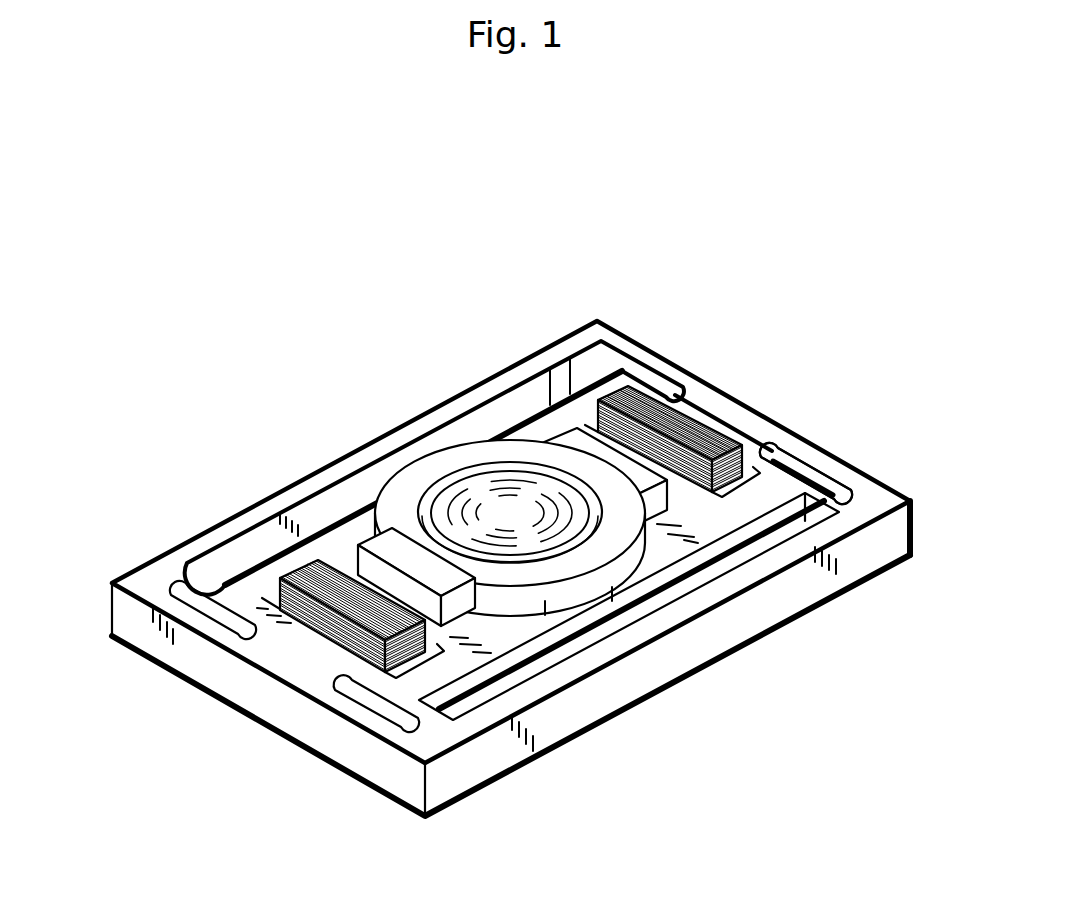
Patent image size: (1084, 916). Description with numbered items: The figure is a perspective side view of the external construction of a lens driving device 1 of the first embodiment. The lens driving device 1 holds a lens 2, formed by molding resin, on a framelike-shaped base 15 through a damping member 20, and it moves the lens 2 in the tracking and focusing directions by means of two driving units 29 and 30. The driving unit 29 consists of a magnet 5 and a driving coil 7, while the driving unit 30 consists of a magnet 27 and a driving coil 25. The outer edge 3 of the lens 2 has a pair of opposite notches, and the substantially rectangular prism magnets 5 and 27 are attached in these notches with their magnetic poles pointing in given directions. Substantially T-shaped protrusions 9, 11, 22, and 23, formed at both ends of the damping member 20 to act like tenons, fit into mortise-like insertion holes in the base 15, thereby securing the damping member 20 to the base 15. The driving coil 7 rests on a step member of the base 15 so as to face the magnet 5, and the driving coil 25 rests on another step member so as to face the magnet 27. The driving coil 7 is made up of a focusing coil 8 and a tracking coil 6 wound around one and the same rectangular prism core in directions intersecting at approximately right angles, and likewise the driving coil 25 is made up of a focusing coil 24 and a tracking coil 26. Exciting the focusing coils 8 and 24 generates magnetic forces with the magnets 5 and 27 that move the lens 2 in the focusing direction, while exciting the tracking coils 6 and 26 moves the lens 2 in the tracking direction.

The lens driving device 1 is at (462, 215).
The lens 2 is at (498, 512).
The outer edge 3 is at (403, 478).
The magnet 5 is at (378, 546).
The tracking coil 6 is at (318, 584).
The driving coil 7 is at (302, 632).
The focusing coil 8 is at (375, 652).
The protrusion 9 is at (172, 588).
The protrusion 11 is at (387, 703).
The base 15 is at (700, 641).
The damping member 20 is at (510, 630).
The protrusion 22 is at (823, 472).
The protrusion 23 is at (660, 382).
The focusing coil 24 is at (810, 475).
The driving coil 25 is at (706, 412).
The tracking coil 26 is at (637, 402).
The magnet 27 is at (570, 446).
The driving unit 29 is at (443, 668).
The driving unit 30 is at (703, 513).